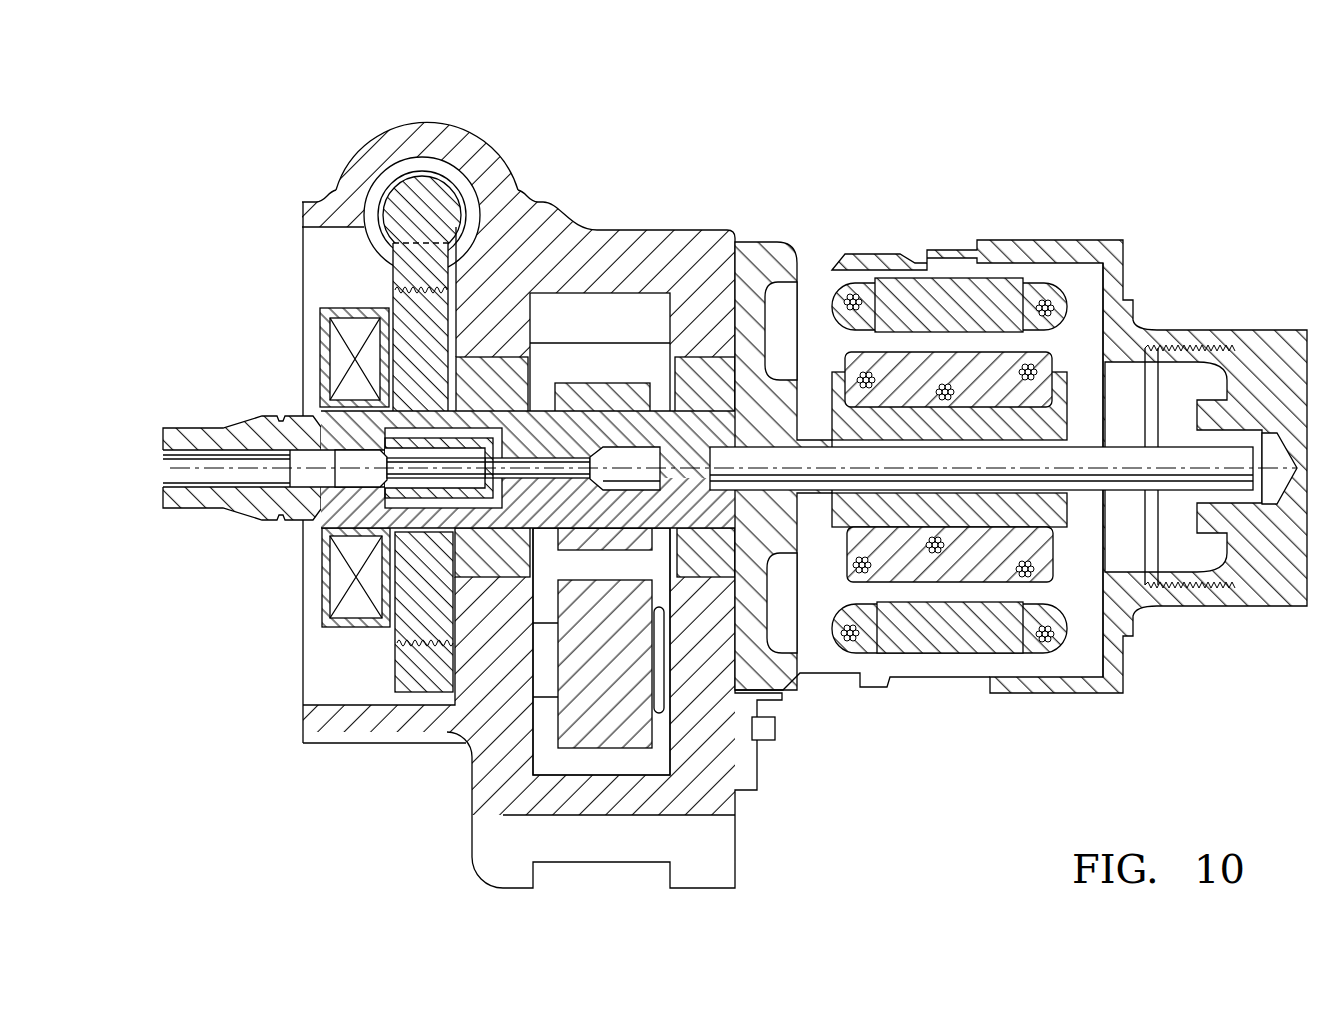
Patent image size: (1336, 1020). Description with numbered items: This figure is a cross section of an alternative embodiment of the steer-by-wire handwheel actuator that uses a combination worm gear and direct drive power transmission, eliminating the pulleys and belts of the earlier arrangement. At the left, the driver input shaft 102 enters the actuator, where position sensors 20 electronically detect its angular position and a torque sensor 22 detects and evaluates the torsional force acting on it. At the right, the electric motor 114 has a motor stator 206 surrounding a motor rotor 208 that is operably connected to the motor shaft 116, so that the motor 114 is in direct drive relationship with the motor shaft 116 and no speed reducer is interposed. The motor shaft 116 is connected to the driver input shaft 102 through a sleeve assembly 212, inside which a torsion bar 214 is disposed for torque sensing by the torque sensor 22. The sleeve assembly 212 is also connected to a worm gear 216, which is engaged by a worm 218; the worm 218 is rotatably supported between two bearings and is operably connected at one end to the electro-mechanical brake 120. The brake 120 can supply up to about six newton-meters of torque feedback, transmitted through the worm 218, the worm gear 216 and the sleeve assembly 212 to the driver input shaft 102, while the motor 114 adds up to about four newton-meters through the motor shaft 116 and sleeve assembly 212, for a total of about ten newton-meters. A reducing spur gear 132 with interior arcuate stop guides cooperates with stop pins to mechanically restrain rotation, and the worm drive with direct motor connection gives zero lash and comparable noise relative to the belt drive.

The position sensors 20 is at (510, 357).
The torque sensor 22 is at (320, 363).
The driver input shaft 102 is at (162, 495).
The electric motor 114 is at (1068, 237).
The motor shaft 116 is at (780, 452).
The electro-mechanical brake 120 is at (353, 148).
The reducing spur gear 132 is at (567, 727).
The motor stator 206 is at (945, 287).
The motor rotor 208 is at (1063, 378).
The sleeve assembly 212 is at (743, 508).
The torsion bar 214 is at (345, 462).
The worm gear 216 is at (400, 667).
The worm 218 is at (437, 207).